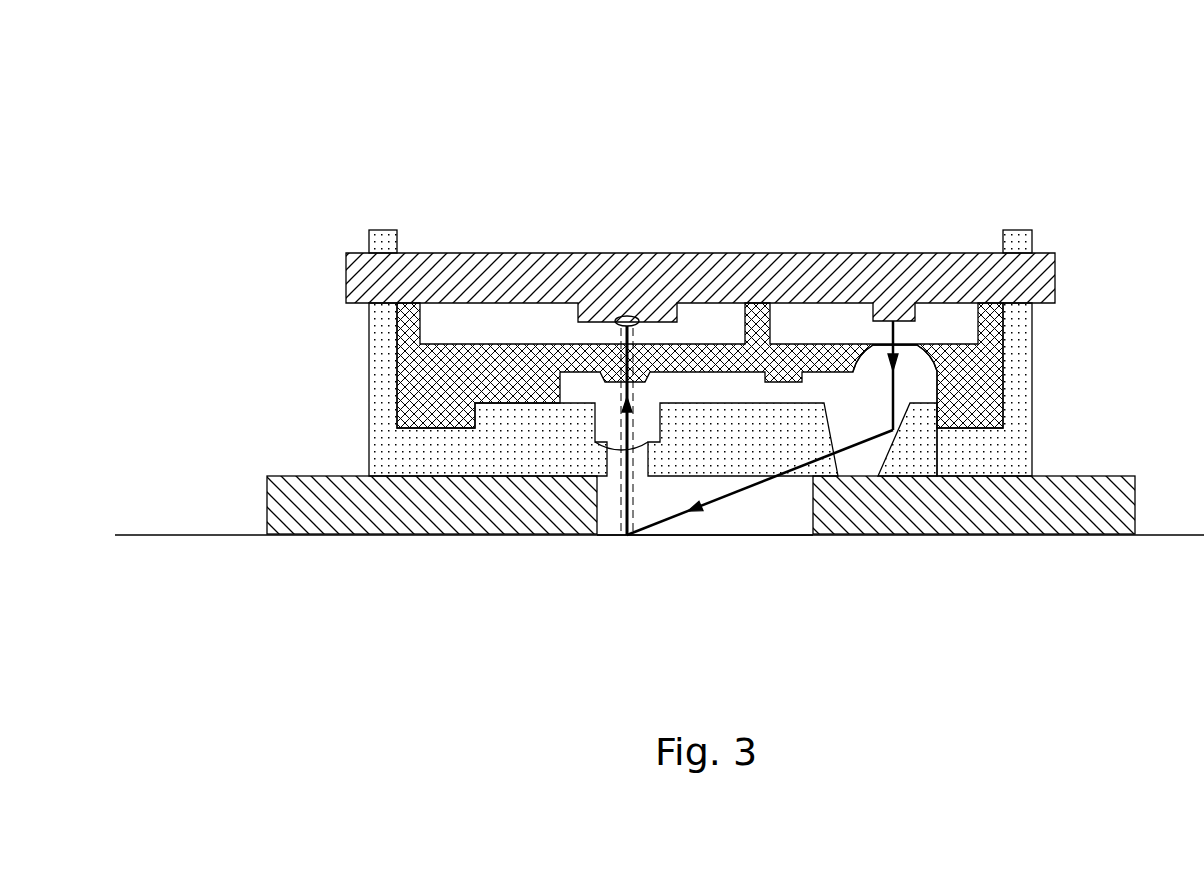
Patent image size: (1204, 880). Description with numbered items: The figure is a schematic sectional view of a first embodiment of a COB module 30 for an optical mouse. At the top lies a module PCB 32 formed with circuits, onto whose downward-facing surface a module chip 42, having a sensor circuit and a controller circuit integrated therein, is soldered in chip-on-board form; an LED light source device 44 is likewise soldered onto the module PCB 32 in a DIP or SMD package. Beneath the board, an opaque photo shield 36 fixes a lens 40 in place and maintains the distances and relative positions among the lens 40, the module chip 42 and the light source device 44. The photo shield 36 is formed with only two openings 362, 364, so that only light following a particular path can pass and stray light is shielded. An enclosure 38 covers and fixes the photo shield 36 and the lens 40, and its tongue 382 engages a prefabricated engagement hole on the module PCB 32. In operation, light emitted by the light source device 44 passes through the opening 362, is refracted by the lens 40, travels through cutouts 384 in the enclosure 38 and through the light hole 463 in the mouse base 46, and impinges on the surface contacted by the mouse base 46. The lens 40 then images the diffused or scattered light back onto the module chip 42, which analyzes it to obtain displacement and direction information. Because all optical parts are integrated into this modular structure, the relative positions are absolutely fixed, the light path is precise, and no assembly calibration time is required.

The COB module 30 is at (865, 110).
The module PCB 32 is at (715, 252).
The photo shield 36 is at (398, 347).
The enclosure 38 is at (369, 413).
The lens 40 is at (573, 393).
The module chip 42 is at (605, 310).
The LED light source device 44 is at (893, 253).
The mouse base 46 is at (267, 512).
The opening 362 is at (915, 368).
The opening 364 is at (611, 385).
The tongue 382 is at (383, 230).
The cutouts 384 is at (640, 467).
The light hole 463 is at (712, 542).